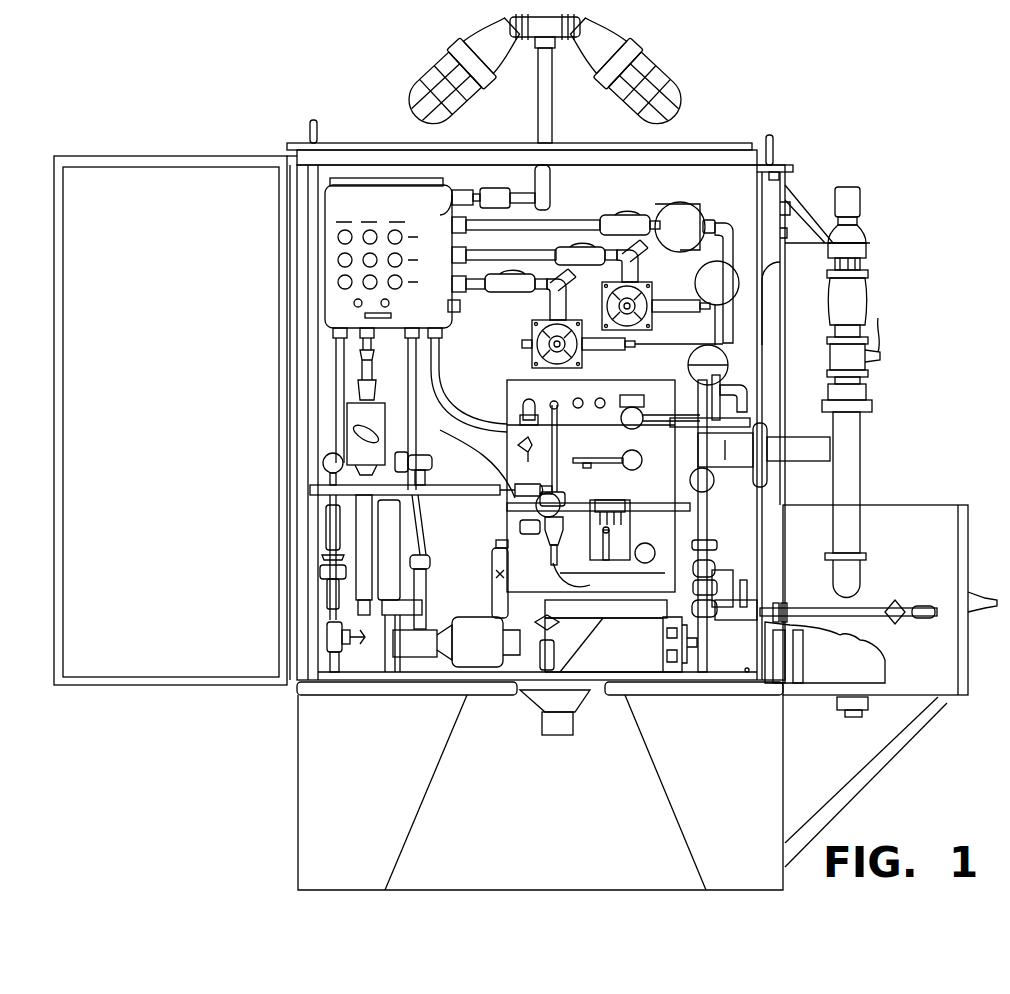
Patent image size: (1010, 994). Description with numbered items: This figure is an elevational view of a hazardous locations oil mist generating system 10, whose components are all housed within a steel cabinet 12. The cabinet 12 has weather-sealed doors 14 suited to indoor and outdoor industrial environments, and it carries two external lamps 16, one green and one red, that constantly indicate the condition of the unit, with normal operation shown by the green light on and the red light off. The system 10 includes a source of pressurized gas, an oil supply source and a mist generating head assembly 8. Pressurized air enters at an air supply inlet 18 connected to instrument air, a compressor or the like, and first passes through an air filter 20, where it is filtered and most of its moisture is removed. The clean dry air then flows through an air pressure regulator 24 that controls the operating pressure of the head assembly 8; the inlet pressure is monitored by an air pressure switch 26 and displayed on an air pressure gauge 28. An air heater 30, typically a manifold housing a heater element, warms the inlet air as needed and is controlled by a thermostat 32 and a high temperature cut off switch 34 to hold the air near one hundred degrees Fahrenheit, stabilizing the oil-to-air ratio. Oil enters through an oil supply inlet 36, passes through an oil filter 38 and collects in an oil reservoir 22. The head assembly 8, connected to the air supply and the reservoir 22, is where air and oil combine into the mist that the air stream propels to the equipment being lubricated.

The mist generating head assembly 8 is at (628, 430).
The oil mist generating system 10 is at (812, 185).
The cabinet 12 is at (700, 160).
The doors 14 is at (200, 208).
The external lamps 16 is at (463, 43).
The air supply inlet 18 is at (695, 697).
The air filter 20 is at (622, 565).
The oil reservoir 22 is at (520, 547).
The air pressure regulator 24 is at (522, 528).
The air pressure switch 26 is at (677, 225).
The air pressure gauge 28 is at (545, 495).
The air heater 30 is at (650, 660).
The thermostat 32 is at (650, 294).
The high temperature cut off switch 34 is at (532, 338).
The oil supply inlet 36 is at (330, 678).
The oil filter 38 is at (318, 553).